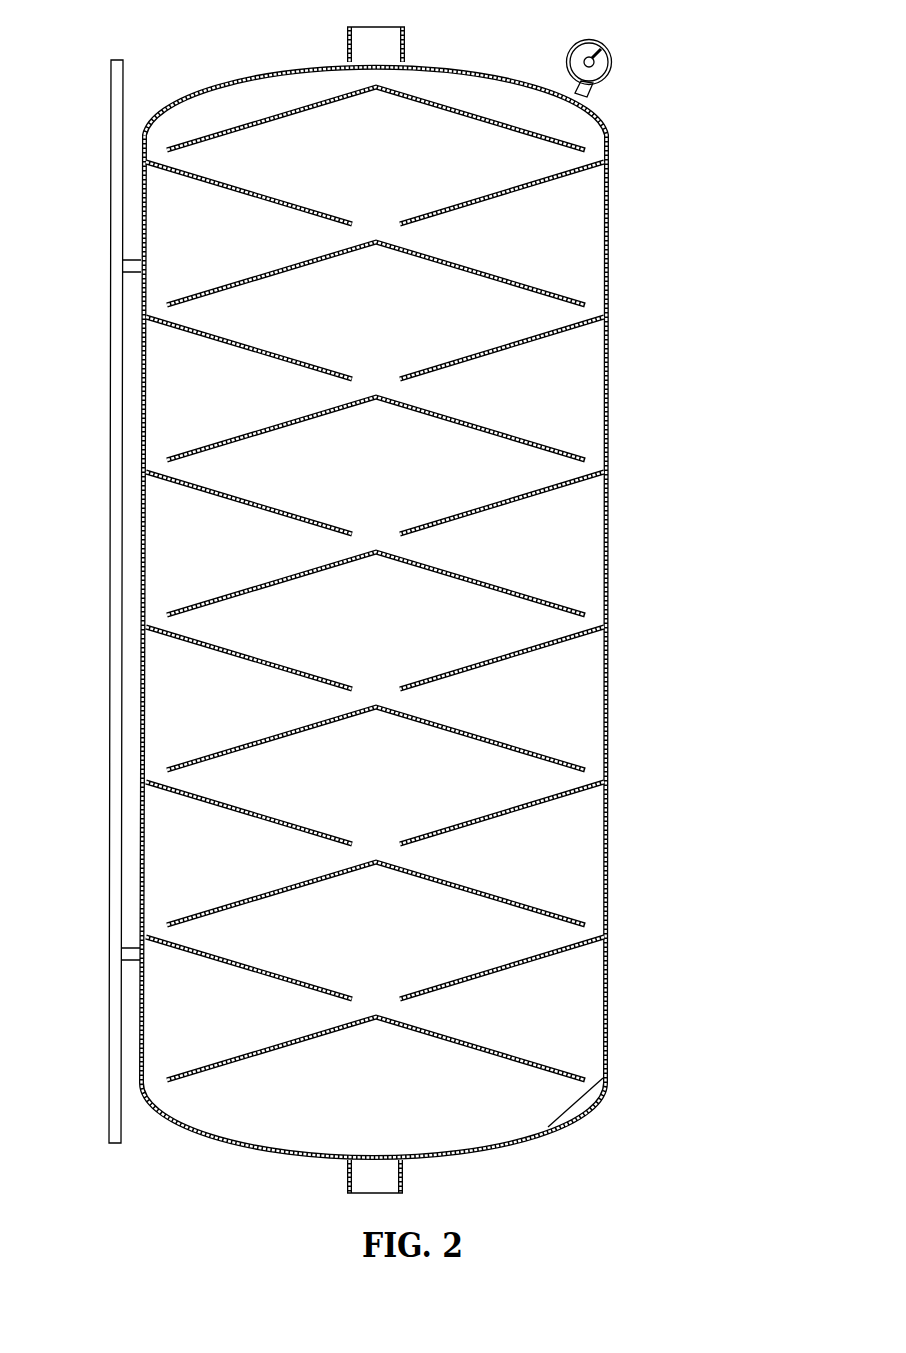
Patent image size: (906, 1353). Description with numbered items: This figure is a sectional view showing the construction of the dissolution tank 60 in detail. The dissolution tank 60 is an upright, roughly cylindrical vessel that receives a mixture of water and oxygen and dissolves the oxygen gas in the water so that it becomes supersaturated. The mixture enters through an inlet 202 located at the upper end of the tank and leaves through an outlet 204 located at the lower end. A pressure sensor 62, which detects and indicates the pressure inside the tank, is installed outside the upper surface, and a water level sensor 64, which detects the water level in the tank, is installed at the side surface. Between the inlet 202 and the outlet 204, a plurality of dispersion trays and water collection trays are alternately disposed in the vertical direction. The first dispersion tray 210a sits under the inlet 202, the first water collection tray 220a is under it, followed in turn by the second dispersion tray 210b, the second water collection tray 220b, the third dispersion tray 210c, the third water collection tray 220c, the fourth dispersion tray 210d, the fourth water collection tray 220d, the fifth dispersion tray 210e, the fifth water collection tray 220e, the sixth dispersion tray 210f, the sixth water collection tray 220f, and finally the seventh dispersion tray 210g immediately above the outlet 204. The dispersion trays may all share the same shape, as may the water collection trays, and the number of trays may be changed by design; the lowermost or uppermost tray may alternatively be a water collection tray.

The dissolution tank 60 is at (707, 97).
The pressure sensor 62 is at (615, 58).
The water level sensor 64 is at (111, 462).
The inlet 202 is at (405, 45).
The outlet 204 is at (403, 1175).
The first dispersion tray 210a is at (313, 105).
The second dispersion tray 210b is at (313, 260).
The third dispersion tray 210c is at (313, 415).
The fourth dispersion tray 210d is at (313, 570).
The fifth dispersion tray 210e is at (313, 725).
The sixth dispersion tray 210f is at (313, 880).
The seventh dispersion tray 210g is at (313, 1035).
The first water collection tray 220a is at (545, 183).
The second water collection tray 220b is at (545, 338).
The third water collection tray 220c is at (545, 493).
The fourth water collection tray 220d is at (545, 648).
The fifth water collection tray 220e is at (545, 803).
The sixth water collection tray 220f is at (545, 958).